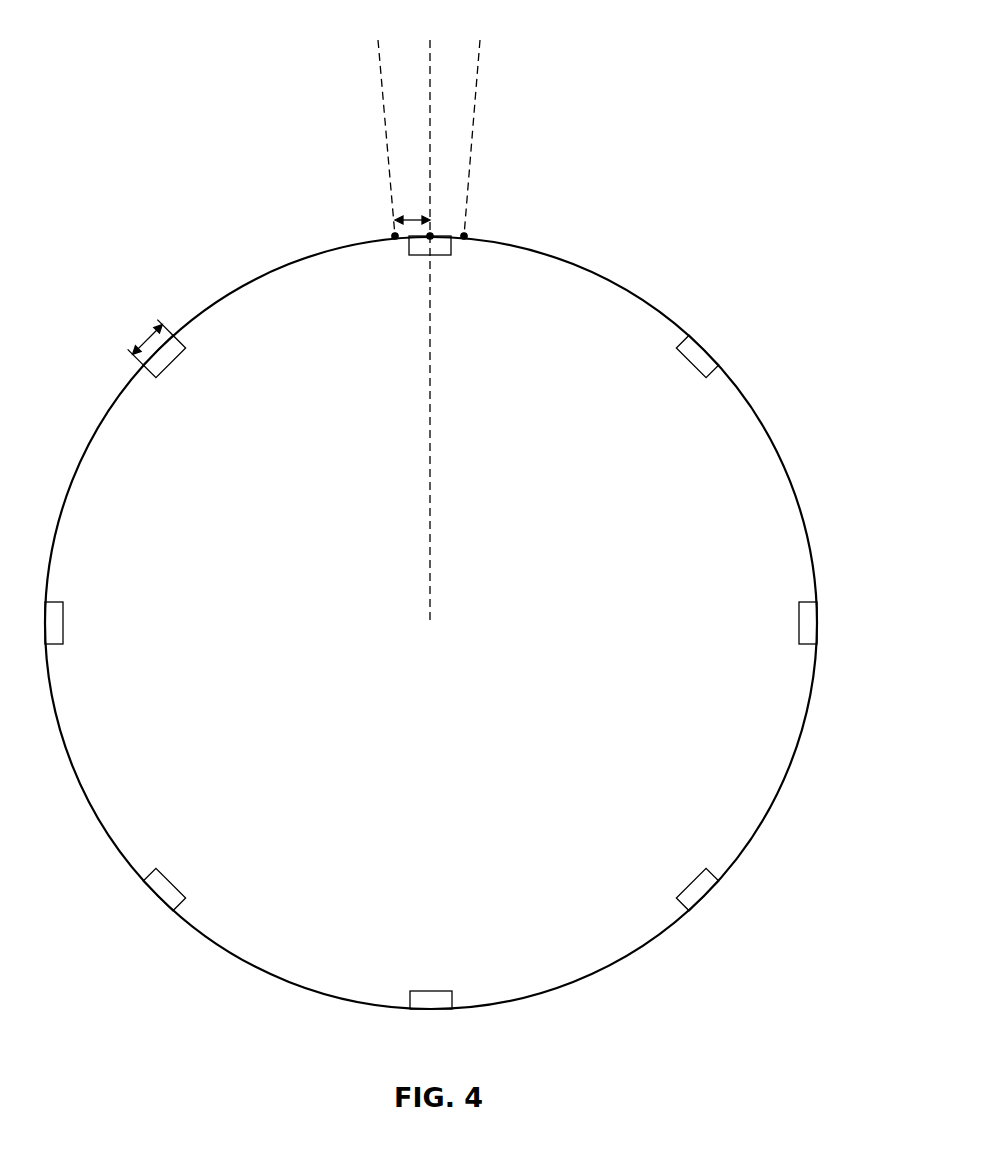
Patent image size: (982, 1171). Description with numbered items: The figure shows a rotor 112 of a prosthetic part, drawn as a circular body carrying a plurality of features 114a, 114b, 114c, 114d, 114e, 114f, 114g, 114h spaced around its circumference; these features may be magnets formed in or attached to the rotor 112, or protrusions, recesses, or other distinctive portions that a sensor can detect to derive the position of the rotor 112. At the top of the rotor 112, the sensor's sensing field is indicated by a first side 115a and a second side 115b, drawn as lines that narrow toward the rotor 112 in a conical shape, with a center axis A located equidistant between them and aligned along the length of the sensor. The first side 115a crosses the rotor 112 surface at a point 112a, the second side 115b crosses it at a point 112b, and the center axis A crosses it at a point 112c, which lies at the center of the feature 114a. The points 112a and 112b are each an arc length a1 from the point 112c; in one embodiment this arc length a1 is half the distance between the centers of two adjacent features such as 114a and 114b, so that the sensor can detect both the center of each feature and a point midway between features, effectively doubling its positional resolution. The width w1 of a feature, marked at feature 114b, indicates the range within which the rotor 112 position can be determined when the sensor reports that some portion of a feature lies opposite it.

The rotor 112 is at (787, 462).
The point 112a is at (395, 238).
The point 112b is at (464, 238).
The point 112c is at (432, 233).
The feature 114a is at (443, 256).
The feature 114b is at (170, 365).
The feature 114c is at (63, 620).
The feature 114d is at (170, 880).
The feature 114e is at (430, 990).
The feature 114f is at (685, 882).
The feature 114g is at (798, 622).
The feature 114h is at (688, 362).
The first side 115a is at (383, 100).
The second side 115b is at (475, 108).
The center axis A is at (430, 70).
The arc length a1 is at (412, 208).
The width w1 is at (142, 334).